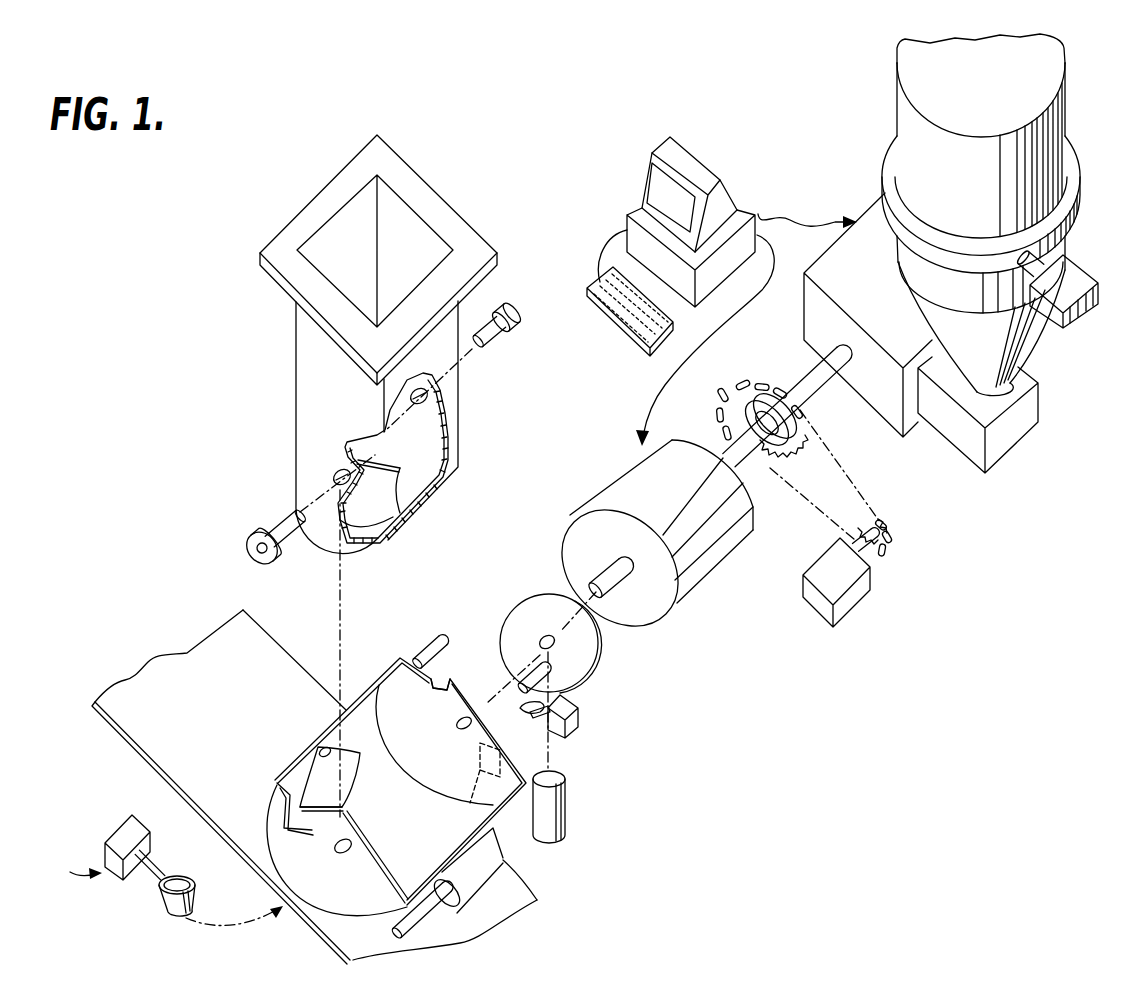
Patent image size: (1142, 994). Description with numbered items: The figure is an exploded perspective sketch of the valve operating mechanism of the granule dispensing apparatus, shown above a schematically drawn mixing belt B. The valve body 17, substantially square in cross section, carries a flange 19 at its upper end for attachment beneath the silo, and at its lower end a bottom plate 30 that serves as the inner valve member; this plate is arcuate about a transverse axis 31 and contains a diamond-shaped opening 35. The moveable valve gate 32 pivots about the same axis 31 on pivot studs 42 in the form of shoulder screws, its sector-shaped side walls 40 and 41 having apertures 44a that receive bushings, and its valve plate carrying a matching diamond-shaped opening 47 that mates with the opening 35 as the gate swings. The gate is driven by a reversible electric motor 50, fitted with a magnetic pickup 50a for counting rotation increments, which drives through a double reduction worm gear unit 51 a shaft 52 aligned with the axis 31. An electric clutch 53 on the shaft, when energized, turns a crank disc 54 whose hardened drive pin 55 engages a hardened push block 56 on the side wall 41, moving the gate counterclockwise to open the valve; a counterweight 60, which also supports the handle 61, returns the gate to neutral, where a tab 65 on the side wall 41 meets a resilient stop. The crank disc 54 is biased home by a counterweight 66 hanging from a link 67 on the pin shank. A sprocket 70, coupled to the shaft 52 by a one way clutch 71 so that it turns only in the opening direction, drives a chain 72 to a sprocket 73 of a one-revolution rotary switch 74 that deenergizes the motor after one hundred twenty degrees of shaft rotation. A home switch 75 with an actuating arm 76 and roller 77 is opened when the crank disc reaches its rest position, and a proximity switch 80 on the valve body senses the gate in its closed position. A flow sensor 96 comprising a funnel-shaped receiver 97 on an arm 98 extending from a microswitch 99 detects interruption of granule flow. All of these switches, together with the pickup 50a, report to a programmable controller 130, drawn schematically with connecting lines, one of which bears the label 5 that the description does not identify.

The valve body 17 is at (302, 380).
The flange 19 is at (445, 220).
The bottom plate 30 is at (415, 490).
The transverse axis 31 is at (330, 490).
The valve gate 32 is at (288, 762).
The diamond-shaped opening 35 is at (368, 516).
The side wall 40 is at (352, 897).
The side wall 41 is at (460, 767).
The pivot studs 42 is at (494, 333).
The apertures 44a is at (457, 723).
The diamond-shaped opening 47 is at (323, 753).
The reversible electric motor 50 is at (1043, 122).
The magnetic pickup 50a is at (1082, 200).
The double reduction worm gear unit 51 is at (1010, 436).
The shaft 52 is at (807, 377).
The electric clutch 53 is at (638, 482).
The crank disc 54 is at (587, 677).
The hardened drive pin 55 is at (548, 688).
The hardened push block 56 is at (473, 802).
The counterweight 60 is at (473, 873).
The handle 61 is at (420, 915).
The tab 65 is at (450, 683).
The counterweight 66 is at (565, 808).
The link 67 is at (548, 768).
The sprocket 70 is at (725, 402).
The one way clutch 71 is at (742, 427).
The chain 72 is at (868, 498).
The sprocket 73 is at (890, 549).
The one-revolution rotary switch 74 is at (850, 603).
The home switch 75 is at (578, 711).
The actuating arm 76 is at (536, 720).
The roller 77 is at (524, 707).
The proximity switch 80 is at (430, 650).
The flow sensor 96 is at (75, 859).
The funnel-shaped receiver 97 is at (173, 907).
The arm 98 is at (150, 863).
The microswitch 99 is at (121, 824).
The programmable controller 130 is at (652, 165).
The control line 5 is at (713, 172).
The mixing belt B is at (182, 664).